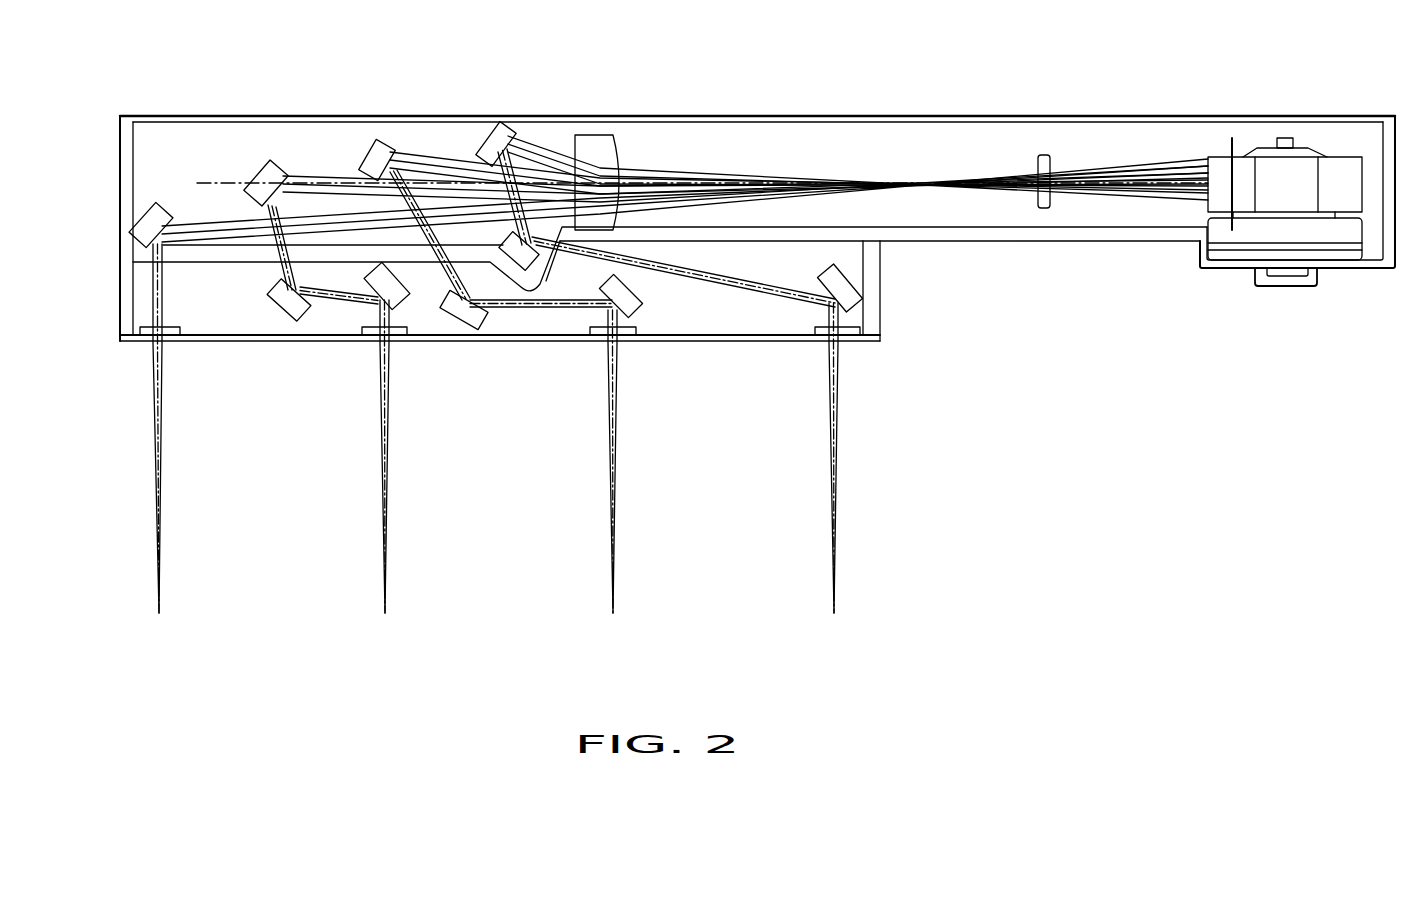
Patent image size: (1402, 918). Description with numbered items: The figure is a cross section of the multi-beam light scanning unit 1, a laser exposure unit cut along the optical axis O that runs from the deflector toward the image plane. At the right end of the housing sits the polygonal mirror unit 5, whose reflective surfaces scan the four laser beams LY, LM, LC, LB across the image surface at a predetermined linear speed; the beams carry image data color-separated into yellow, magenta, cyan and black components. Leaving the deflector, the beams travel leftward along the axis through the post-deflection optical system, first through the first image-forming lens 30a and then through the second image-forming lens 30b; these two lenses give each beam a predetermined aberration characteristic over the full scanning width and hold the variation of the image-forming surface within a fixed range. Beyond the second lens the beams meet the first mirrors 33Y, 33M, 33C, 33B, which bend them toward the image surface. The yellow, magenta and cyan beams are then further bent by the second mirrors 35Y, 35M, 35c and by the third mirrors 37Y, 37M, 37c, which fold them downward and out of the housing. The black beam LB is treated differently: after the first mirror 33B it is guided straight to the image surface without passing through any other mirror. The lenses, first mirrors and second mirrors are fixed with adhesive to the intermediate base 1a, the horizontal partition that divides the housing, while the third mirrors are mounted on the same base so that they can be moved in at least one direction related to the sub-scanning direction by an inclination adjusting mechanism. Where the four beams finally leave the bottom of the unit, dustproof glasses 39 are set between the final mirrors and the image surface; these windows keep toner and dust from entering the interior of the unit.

The multi-beam light scanning unit 1 is at (1354, 115).
The intermediate base 1a is at (1095, 243).
The polygonal mirror unit 5 is at (1270, 175).
The first image-forming lens 30a is at (1045, 153).
The second image-forming lens 30b is at (598, 142).
The optical axis O is at (1140, 181).
The first mirror 33B is at (152, 204).
The first mirror 33C is at (262, 164).
The first mirror 33M is at (382, 146).
The first mirror 33Y is at (501, 130).
The second mirror 35c is at (290, 306).
The second mirror 35M is at (470, 322).
The second mirror 35Y is at (522, 259).
The third mirror 37c is at (396, 300).
The third mirror 37M is at (640, 307).
The third mirror 37Y is at (858, 302).
The dustproof glass 39 is at (168, 340).
The fourth laser beam LB is at (162, 446).
The third laser beam LC is at (388, 474).
The second laser beam LM is at (613, 479).
The first laser beam LY is at (838, 475).